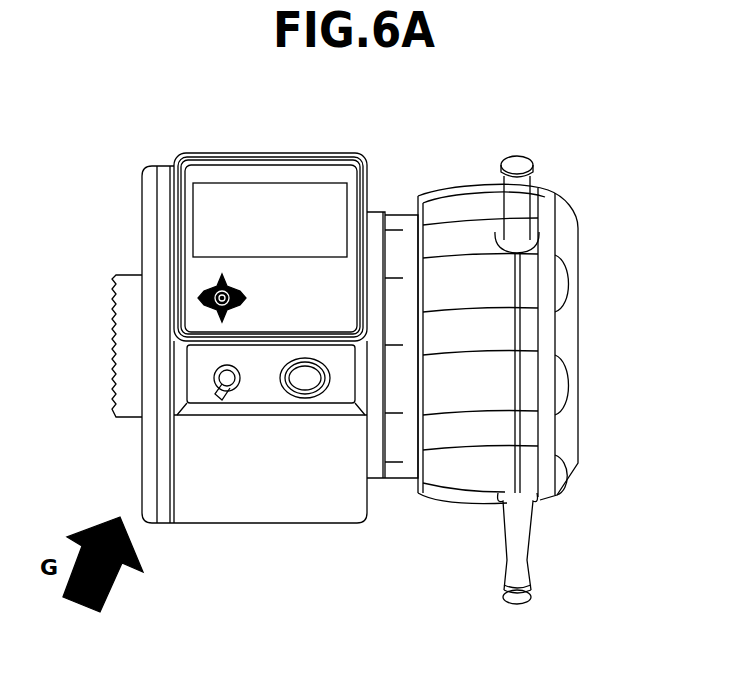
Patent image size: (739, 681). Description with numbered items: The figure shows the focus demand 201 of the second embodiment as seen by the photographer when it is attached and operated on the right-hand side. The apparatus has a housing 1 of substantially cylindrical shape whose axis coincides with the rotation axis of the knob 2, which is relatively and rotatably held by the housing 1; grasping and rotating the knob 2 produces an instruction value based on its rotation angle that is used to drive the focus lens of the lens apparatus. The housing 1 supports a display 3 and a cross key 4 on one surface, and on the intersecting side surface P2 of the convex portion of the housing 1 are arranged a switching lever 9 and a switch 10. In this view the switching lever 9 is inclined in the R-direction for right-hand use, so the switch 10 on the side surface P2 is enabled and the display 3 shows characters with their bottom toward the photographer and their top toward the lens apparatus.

The housing 1 is at (329, 523).
The knob 2 is at (567, 345).
The display 3 is at (255, 192).
The cross key 4 is at (218, 287).
The switching lever 9 is at (219, 397).
The switch 10 is at (304, 382).
The side surface P2 is at (188, 395).
The focus demand 201 is at (529, 347).